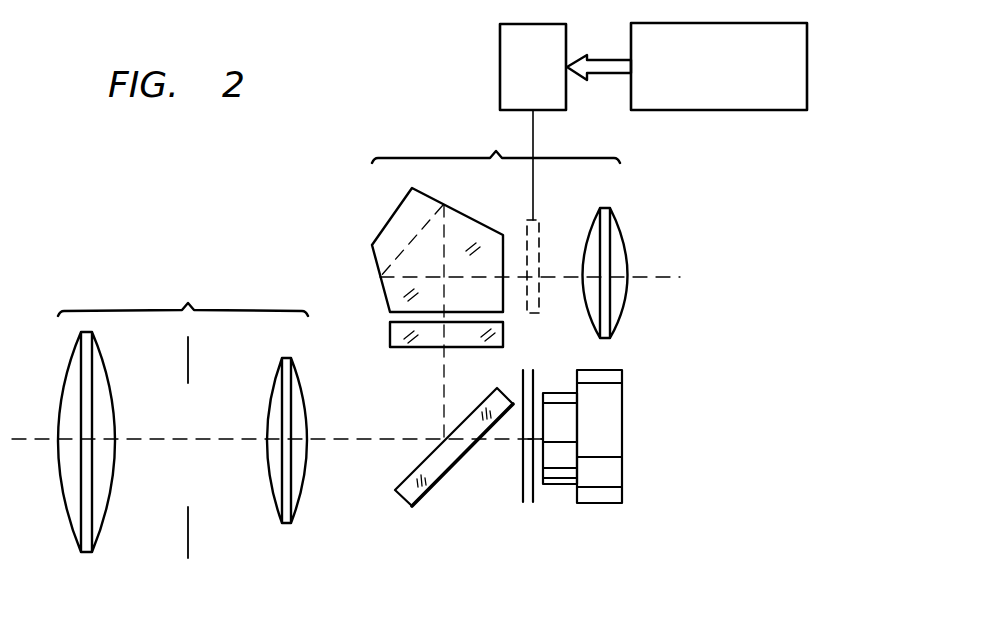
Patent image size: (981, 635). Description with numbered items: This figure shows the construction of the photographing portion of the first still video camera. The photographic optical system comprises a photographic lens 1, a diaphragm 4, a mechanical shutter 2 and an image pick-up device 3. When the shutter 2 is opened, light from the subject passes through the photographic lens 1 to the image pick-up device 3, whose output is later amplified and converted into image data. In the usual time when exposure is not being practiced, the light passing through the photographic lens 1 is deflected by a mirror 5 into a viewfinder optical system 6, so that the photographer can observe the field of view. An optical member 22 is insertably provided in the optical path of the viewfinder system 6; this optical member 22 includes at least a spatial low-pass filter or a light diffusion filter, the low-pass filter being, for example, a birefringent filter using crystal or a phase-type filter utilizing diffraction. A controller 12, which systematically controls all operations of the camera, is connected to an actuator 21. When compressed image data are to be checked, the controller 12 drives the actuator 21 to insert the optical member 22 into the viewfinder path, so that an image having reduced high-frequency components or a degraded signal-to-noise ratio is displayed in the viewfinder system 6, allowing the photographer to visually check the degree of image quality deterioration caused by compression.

The photographic lens 1 is at (183, 411).
The diaphragm 4 is at (188, 546).
The mirror 5 is at (420, 497).
The mechanical shutter 2 is at (535, 500).
The image pick-up device 3 is at (622, 500).
The viewfinder optical system 6 is at (500, 236).
The optical member 22 is at (540, 229).
The actuator 21 is at (500, 80).
The controller 12 is at (807, 67).